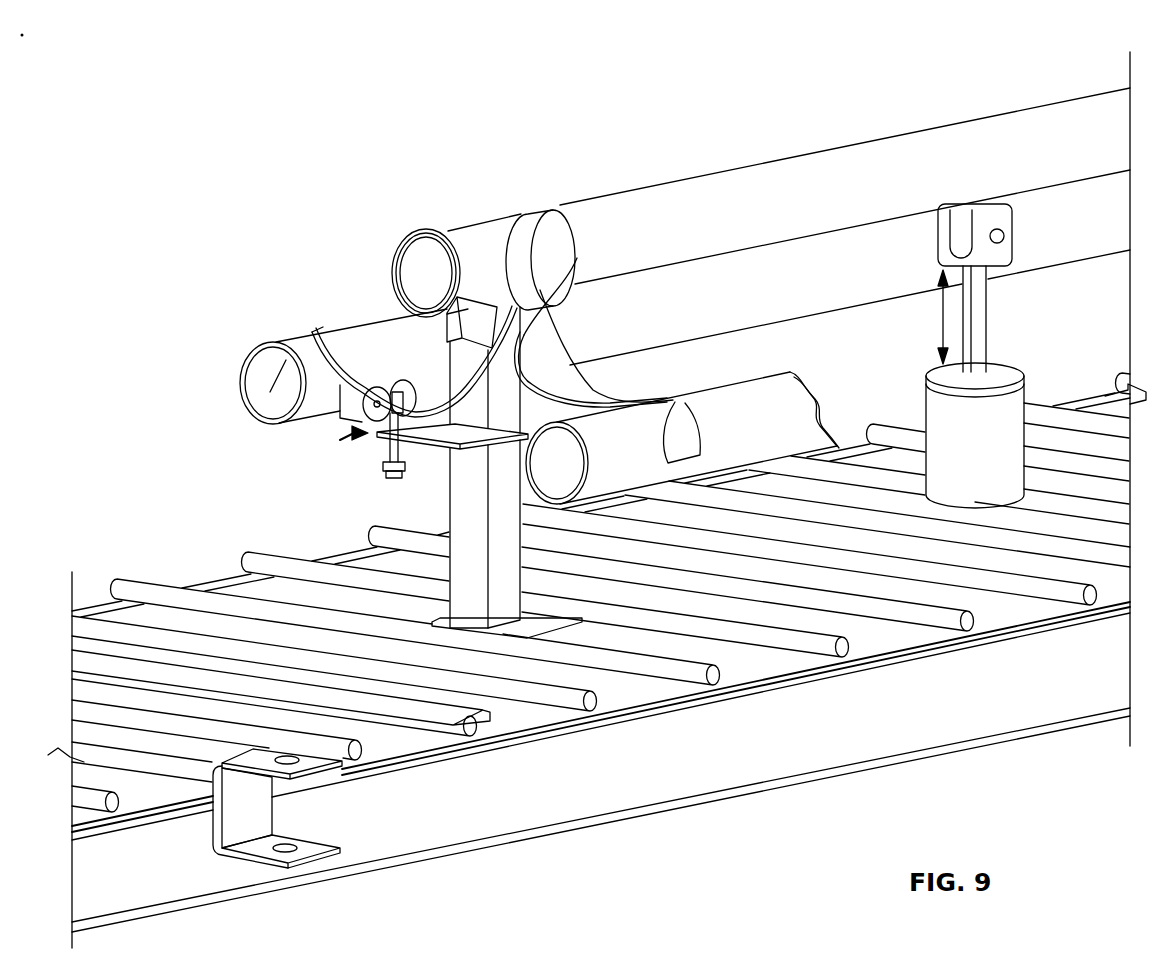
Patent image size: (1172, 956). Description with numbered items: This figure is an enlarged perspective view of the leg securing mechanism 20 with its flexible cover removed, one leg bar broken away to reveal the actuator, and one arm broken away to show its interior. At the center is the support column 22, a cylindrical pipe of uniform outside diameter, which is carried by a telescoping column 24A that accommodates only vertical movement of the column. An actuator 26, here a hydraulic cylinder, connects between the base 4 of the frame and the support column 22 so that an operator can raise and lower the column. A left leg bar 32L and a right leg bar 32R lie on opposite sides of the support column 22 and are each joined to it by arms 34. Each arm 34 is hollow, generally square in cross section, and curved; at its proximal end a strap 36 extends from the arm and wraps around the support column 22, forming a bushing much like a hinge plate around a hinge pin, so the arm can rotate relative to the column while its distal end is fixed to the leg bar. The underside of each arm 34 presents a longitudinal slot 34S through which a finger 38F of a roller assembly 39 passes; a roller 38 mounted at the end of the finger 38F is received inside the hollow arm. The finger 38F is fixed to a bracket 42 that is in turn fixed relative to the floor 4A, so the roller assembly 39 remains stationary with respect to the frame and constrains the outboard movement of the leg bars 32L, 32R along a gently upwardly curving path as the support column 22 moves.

The base 4 is at (635, 786).
The floor 4A is at (293, 596).
The leg securing mechanism 20 is at (403, 142).
The support column 22 is at (747, 224).
The telescoping column 24A is at (460, 532).
The actuator 26 is at (952, 455).
The left leg bar 32L is at (363, 356).
The right leg bar 32R is at (722, 434).
The arm 34 is at (318, 360).
The longitudinal slot 34S is at (574, 264).
The strap 36 is at (449, 229).
The roller 38 is at (413, 393).
The finger 38F is at (388, 453).
The roller assembly 39 is at (340, 440).
The bracket 42 is at (436, 444).